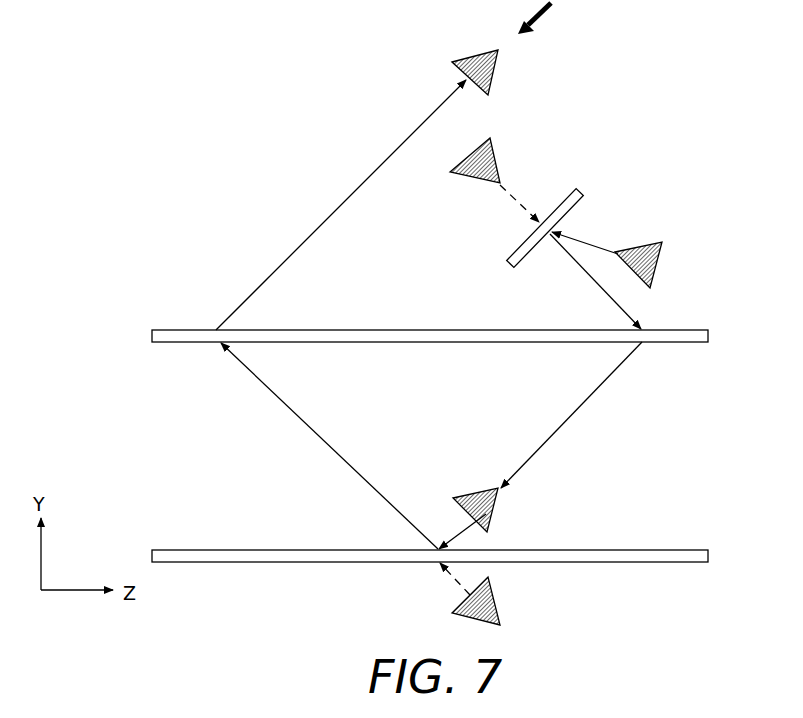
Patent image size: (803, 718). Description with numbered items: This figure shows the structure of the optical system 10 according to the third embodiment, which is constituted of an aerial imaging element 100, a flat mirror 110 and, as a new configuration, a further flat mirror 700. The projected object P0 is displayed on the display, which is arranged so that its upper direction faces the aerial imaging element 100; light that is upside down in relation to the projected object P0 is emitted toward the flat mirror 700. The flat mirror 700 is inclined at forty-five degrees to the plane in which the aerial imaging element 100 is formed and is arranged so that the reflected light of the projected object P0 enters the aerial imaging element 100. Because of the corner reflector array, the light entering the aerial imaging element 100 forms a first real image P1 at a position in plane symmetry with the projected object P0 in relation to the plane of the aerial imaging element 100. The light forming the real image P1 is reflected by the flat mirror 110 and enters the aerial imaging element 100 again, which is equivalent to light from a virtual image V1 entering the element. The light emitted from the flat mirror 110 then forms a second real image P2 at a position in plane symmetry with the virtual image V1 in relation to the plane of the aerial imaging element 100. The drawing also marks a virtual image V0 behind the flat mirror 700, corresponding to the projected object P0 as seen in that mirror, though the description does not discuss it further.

The optical system 10 is at (174, 197).
The aerial imaging element 100 is at (184, 326).
The flat mirror 110 is at (183, 550).
The flat mirror 700 is at (584, 192).
The projected object P0 is at (660, 242).
The real image P1 is at (497, 493).
The real image P2 is at (497, 66).
The virtual image V0 is at (494, 151).
The virtual image V1 is at (501, 600).